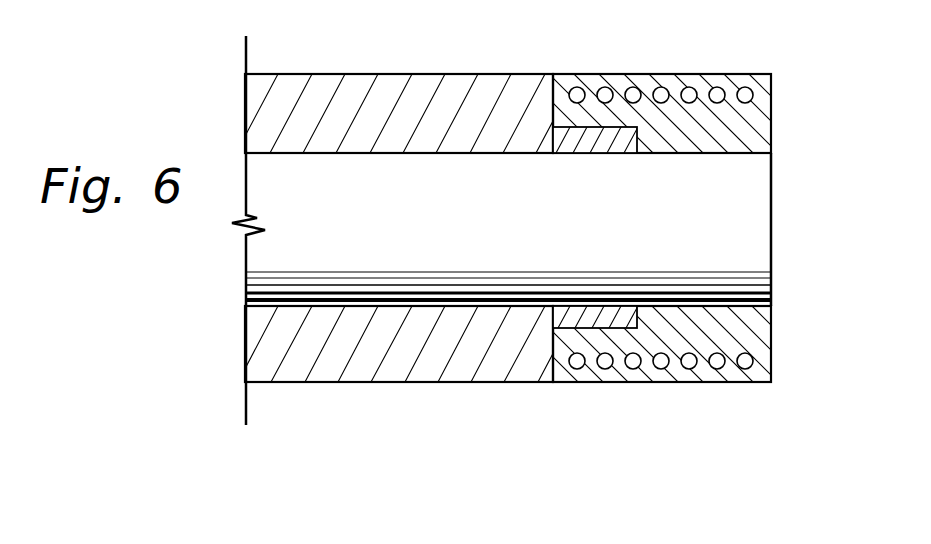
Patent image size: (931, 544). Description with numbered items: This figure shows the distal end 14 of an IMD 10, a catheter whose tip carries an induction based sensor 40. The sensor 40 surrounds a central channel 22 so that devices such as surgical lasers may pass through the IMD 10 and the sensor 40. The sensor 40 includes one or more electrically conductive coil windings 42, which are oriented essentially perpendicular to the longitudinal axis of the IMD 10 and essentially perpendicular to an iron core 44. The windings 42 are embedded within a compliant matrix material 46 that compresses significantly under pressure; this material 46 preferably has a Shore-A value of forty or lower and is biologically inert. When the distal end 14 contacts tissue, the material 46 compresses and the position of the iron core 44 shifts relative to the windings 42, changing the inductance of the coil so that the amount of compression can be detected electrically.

The IMD 10 is at (395, 72).
The distal end 14 is at (772, 113).
The channel 22 is at (772, 229).
The induction based sensor 40 is at (732, 382).
The electrically conductive coil windings 42 is at (635, 367).
The iron core 44 is at (565, 135).
The compliant matrix material 46 is at (745, 337).